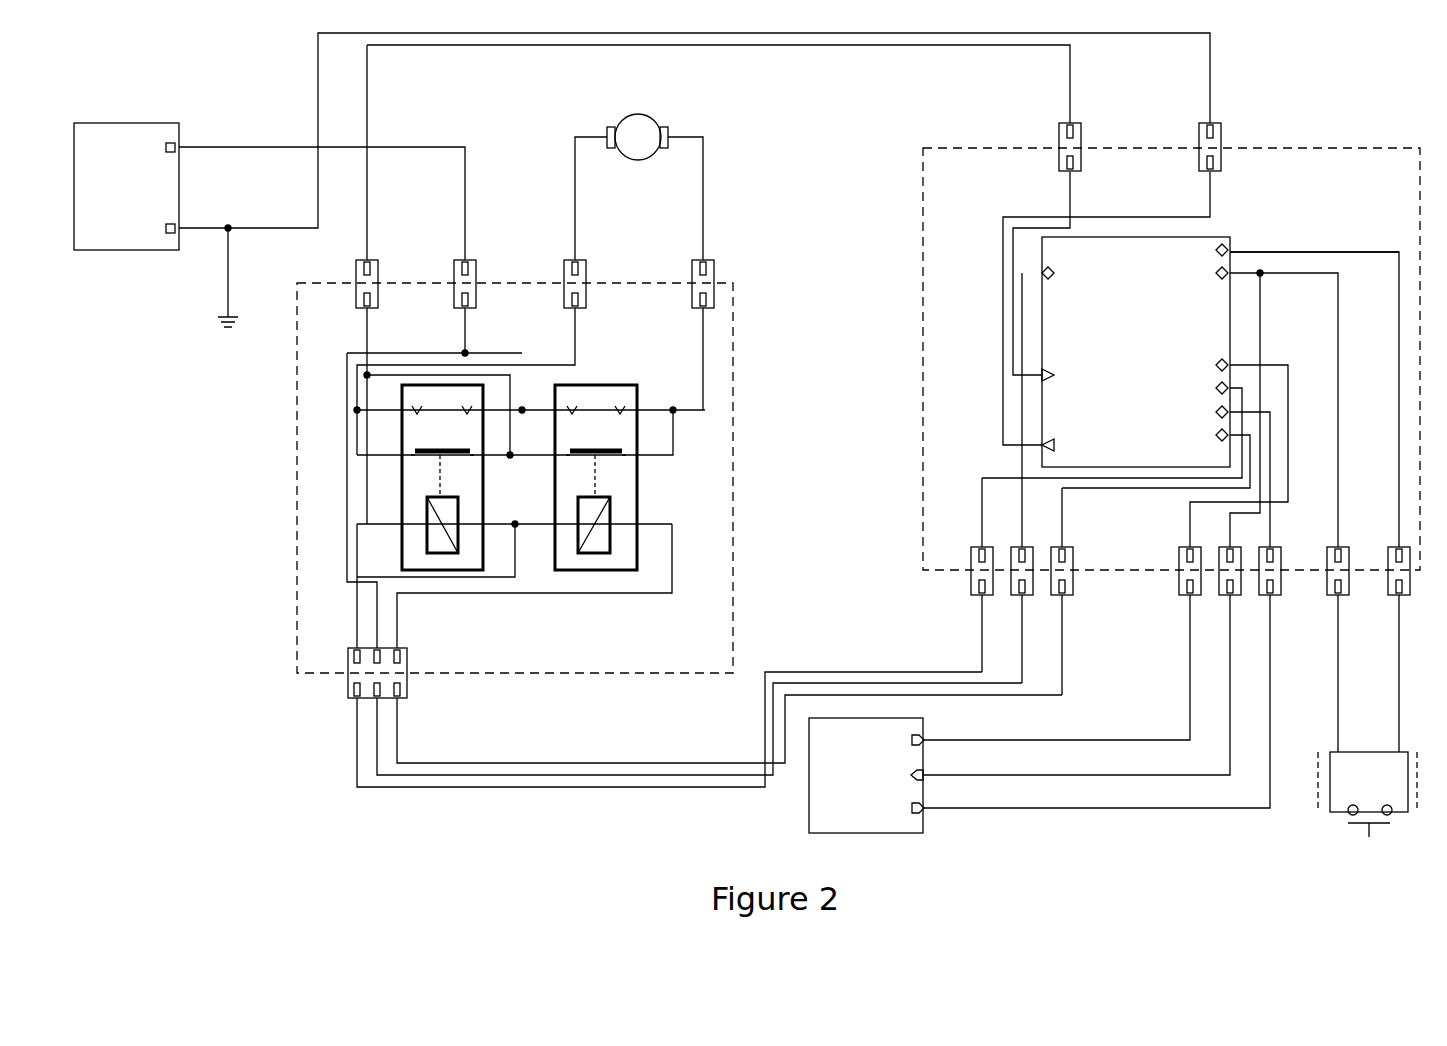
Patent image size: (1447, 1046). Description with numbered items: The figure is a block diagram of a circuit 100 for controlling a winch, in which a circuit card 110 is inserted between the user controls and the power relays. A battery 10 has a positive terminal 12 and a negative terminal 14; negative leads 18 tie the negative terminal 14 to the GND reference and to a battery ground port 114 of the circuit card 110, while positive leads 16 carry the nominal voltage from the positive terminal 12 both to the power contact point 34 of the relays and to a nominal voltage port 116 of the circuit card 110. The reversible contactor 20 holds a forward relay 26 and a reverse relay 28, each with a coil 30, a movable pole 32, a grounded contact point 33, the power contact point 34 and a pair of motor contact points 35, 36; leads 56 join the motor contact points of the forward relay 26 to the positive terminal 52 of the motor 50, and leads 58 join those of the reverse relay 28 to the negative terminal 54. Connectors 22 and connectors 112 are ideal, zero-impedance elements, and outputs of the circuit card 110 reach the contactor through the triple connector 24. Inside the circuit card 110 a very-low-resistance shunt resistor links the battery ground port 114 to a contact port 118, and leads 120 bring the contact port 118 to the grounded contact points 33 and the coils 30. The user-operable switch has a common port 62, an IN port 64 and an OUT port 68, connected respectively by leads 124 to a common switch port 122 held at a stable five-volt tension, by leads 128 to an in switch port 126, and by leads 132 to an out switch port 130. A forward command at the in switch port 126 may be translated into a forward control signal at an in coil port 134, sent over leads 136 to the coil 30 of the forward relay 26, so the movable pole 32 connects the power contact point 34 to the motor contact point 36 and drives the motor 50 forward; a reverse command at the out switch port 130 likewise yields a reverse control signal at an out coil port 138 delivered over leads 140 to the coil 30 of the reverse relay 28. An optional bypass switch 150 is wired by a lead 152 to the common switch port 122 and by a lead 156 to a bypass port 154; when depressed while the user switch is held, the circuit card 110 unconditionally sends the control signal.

The battery 10 is at (140, 123).
The positive terminal 12 is at (170, 143).
The negative terminal 14 is at (176, 238).
The positive leads 16 is at (230, 147).
The negative leads 18 is at (262, 228).
The reversible contactor 20 is at (735, 490).
The connectors 22 is at (379, 270).
The triple connector 24 is at (348, 680).
The forward relay 26 is at (485, 525).
The reverse relay 28 is at (638, 525).
The coil 30 is at (427, 537).
The movable pole 32 is at (440, 458).
The grounded contact point 33 is at (470, 453).
The power contact point 34 is at (465, 413).
The motor contact point 35 is at (414, 453).
The motor contact point 36 is at (419, 408).
The motor 50 is at (637, 114).
The positive terminal 52 is at (609, 150).
The negative terminal 54 is at (664, 150).
The leads 56 is at (576, 218).
The leads 58 is at (704, 190).
The common port 62 is at (924, 772).
The IN port 64 is at (924, 740).
The OUT port 68 is at (924, 812).
The circuit 100 is at (1342, 58).
The circuit card 110 is at (1200, 237).
The connectors 112 is at (1082, 137).
The battery ground port 114 is at (1055, 440).
The nominal voltage port 116 is at (1052, 285).
The contact port 118 is at (1055, 368).
The leads 120 is at (368, 102).
The common switch port 122 is at (1218, 280).
The leads 124 is at (1162, 775).
The in switch port 126 is at (1218, 358).
The leads 128 is at (1105, 740).
The out switch port 130 is at (1238, 395).
The leads 132 is at (1135, 808).
The in coil port 134 is at (1235, 378).
The leads 136 is at (357, 520).
The out coil port 138 is at (1238, 418).
The leads 140 is at (673, 560).
The bypass switch 150 is at (1330, 812).
The lead 152 is at (1340, 292).
The bypass port 154 is at (1235, 250).
The lead 156 is at (1355, 250).